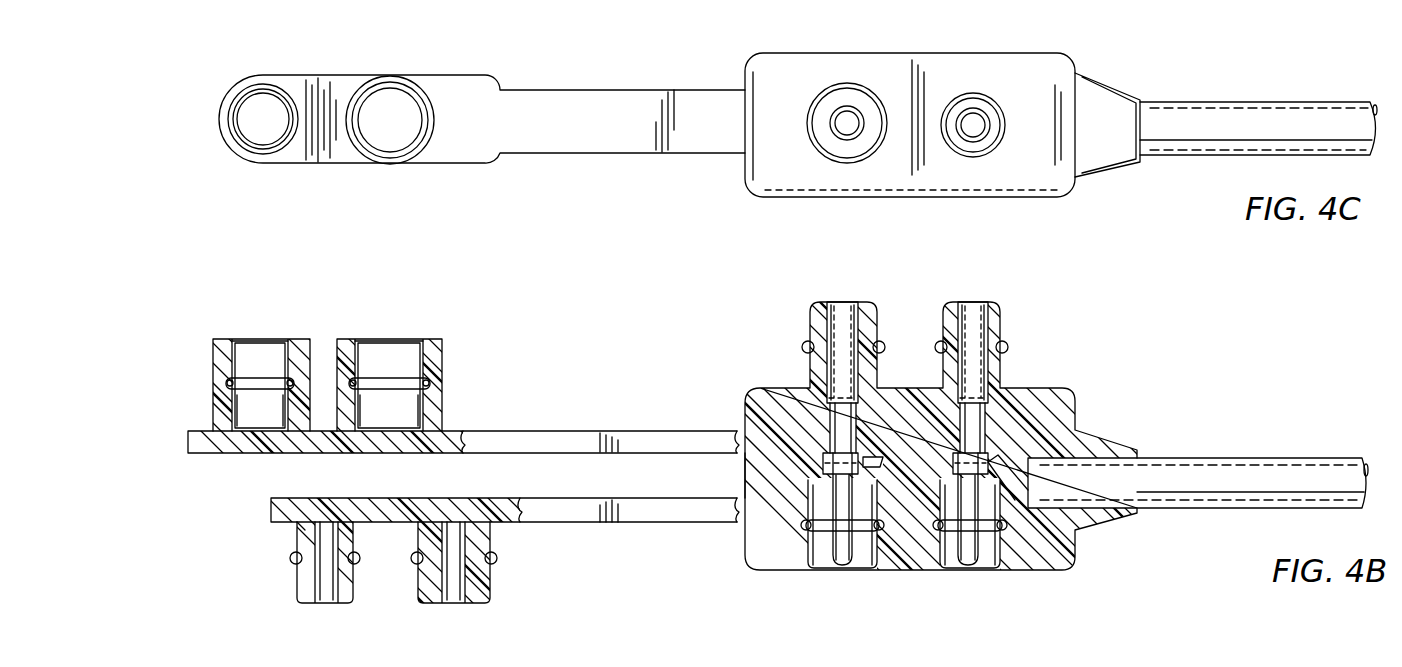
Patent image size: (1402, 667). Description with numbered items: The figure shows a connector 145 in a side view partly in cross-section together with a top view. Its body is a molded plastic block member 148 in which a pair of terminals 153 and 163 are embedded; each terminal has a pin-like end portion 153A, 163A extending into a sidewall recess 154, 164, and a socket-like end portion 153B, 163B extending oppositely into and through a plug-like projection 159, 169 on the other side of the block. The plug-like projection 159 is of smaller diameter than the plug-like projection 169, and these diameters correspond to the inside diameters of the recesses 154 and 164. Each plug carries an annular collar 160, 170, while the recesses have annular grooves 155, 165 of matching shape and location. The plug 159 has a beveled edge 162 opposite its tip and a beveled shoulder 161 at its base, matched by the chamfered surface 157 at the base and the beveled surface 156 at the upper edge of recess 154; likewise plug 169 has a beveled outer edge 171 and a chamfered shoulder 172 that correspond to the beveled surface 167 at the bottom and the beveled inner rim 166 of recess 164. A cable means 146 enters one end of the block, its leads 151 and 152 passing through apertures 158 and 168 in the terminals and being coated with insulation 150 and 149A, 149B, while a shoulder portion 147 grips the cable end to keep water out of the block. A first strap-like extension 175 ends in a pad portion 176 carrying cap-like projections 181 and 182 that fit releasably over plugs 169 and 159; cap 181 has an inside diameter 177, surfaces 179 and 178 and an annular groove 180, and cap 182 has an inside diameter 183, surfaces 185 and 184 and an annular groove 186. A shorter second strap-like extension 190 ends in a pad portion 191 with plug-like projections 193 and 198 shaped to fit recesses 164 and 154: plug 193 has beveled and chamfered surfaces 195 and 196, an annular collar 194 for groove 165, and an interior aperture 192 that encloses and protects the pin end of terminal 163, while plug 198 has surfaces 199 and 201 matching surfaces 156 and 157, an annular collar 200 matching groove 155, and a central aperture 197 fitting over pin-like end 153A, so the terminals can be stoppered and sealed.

In FIG. 4B, the connector 145 is at (127, 434).
In FIG. 4C, the cable means 146 is at (1297, 102).
In FIG. 4B, the cable means 146 is at (1283, 458).
In FIG. 4C, the shoulder portion 147 is at (1113, 87).
In FIG. 4B, the shoulder portion 147 is at (1115, 442).
In FIG. 4C, the block member 148 is at (1052, 178).
In FIG. 4B, the block member 148 is at (1060, 540).
In FIG. 4B, the insulation 149A is at (1020, 535).
In FIG. 4B, the insulation 149B is at (902, 472).
In FIG. 4B, the insulation 150 is at (1045, 392).
In FIG. 4B, the lead 151 is at (947, 455).
In FIG. 4B, the lead 152 is at (770, 423).
In FIG. 4B, the terminal 153 is at (1000, 392).
In FIG. 4B, the pin-like end portion 153A is at (968, 573).
In FIG. 4C, the socket-like end portion 153B is at (980, 137).
In FIG. 4B, the socket-like end portion 153B is at (973, 305).
In FIG. 4C, the sidewall recess 154 is at (968, 137).
In FIG. 4B, the sidewall recess 154 is at (963, 300).
In FIG. 4B, the annular groove 155 is at (1035, 560).
In FIG. 4B, the beveled surface 156 is at (952, 573).
In FIG. 4B, the chamfered surface 157 is at (987, 567).
In FIG. 4B, the aperture 158 is at (1013, 465).
In FIG. 4C, the plug-like projection 159 is at (1000, 122).
In FIG. 4B, the plug-like projection 159 is at (1000, 325).
In FIG. 4C, the annular collar 160 is at (965, 92).
In FIG. 4B, the annular collar 160 is at (943, 347).
In FIG. 4B, the beveled shoulder 161 is at (993, 410).
In FIG. 4C, the beveled edge 162 is at (988, 93).
In FIG. 4B, the beveled edge 162 is at (993, 303).
In FIG. 4B, the terminal 163 is at (775, 572).
In FIG. 4B, the pin-like end portion 163A is at (838, 563).
In FIG. 4C, the socket-like end portion 163B is at (863, 117).
In FIG. 4B, the socket-like end portion 163B is at (843, 303).
In FIG. 4C, the sidewall recess 164 is at (842, 137).
In FIG. 4B, the sidewall recess 164 is at (810, 357).
In FIG. 4B, the annular groove 165 is at (810, 570).
In FIG. 4B, the beveled inner rim 166 is at (810, 573).
In FIG. 4B, the beveled surface 167 is at (840, 502).
In FIG. 4B, the aperture 168 is at (817, 463).
In FIG. 4C, the plug-like projection 169 is at (852, 98).
In FIG. 4B, the plug-like projection 169 is at (863, 308).
In FIG. 4C, the annular collar 170 is at (816, 100).
In FIG. 4B, the annular collar 170 is at (807, 340).
In FIG. 4C, the beveled outer edge 171 is at (843, 90).
In FIG. 4B, the beveled outer edge 171 is at (827, 303).
In FIG. 4B, the chamfered shoulder portion 172 is at (808, 382).
In FIG. 4C, the first strap-like extension 175 is at (602, 89).
In FIG. 4B, the first strap-like extension 175 is at (598, 430).
In FIG. 4B, the pad portion 176 is at (205, 451).
In FIG. 4C, the inside diameter 177 is at (400, 100).
In FIG. 4B, the inside diameter 177 is at (417, 353).
In FIG. 4C, the surface 178 is at (393, 155).
In FIG. 4B, the surface 178 is at (417, 415).
In FIG. 4C, the surface 179 is at (380, 157).
In FIG. 4B, the surface 179 is at (357, 343).
In FIG. 4B, the annular groove 180 is at (425, 383).
In FIG. 4C, the cap-like projection 181 is at (347, 143).
In FIG. 4B, the cap-like projection 181 is at (433, 342).
In FIG. 4C, the cap-like projection 182 is at (222, 142).
In FIG. 4B, the cap-like projection 182 is at (213, 355).
In FIG. 4C, the inside diameter 183 is at (257, 133).
In FIG. 4B, the inside diameter 183 is at (245, 357).
In FIG. 4C, the surface 184 is at (280, 93).
In FIG. 4B, the surface 184 is at (233, 417).
In FIG. 4C, the surface 185 is at (263, 86).
In FIG. 4B, the surface 185 is at (288, 350).
In FIG. 4B, the annular groove 186 is at (227, 380).
In FIG. 4B, the second strap-like extension 190 is at (637, 523).
In FIG. 4C, the pad portion 191 is at (472, 167).
In FIG. 4B, the pad portion 191 is at (270, 510).
In FIG. 4B, the interior aperture 192 is at (458, 597).
In FIG. 4B, the plug-like projection 193 is at (490, 590).
In FIG. 4B, the annular collar 194 is at (415, 558).
In FIG. 4B, the beveled surface 195 is at (490, 530).
In FIG. 4B, the chamfered surface 196 is at (420, 602).
In FIG. 4B, the central aperture 197 is at (328, 597).
In FIG. 4B, the plug-like projection 198 is at (297, 598).
In FIG. 4B, the surface 199 is at (300, 606).
In FIG. 4B, the annular collar 200 is at (297, 560).
In FIG. 4B, the surface 201 is at (295, 522).